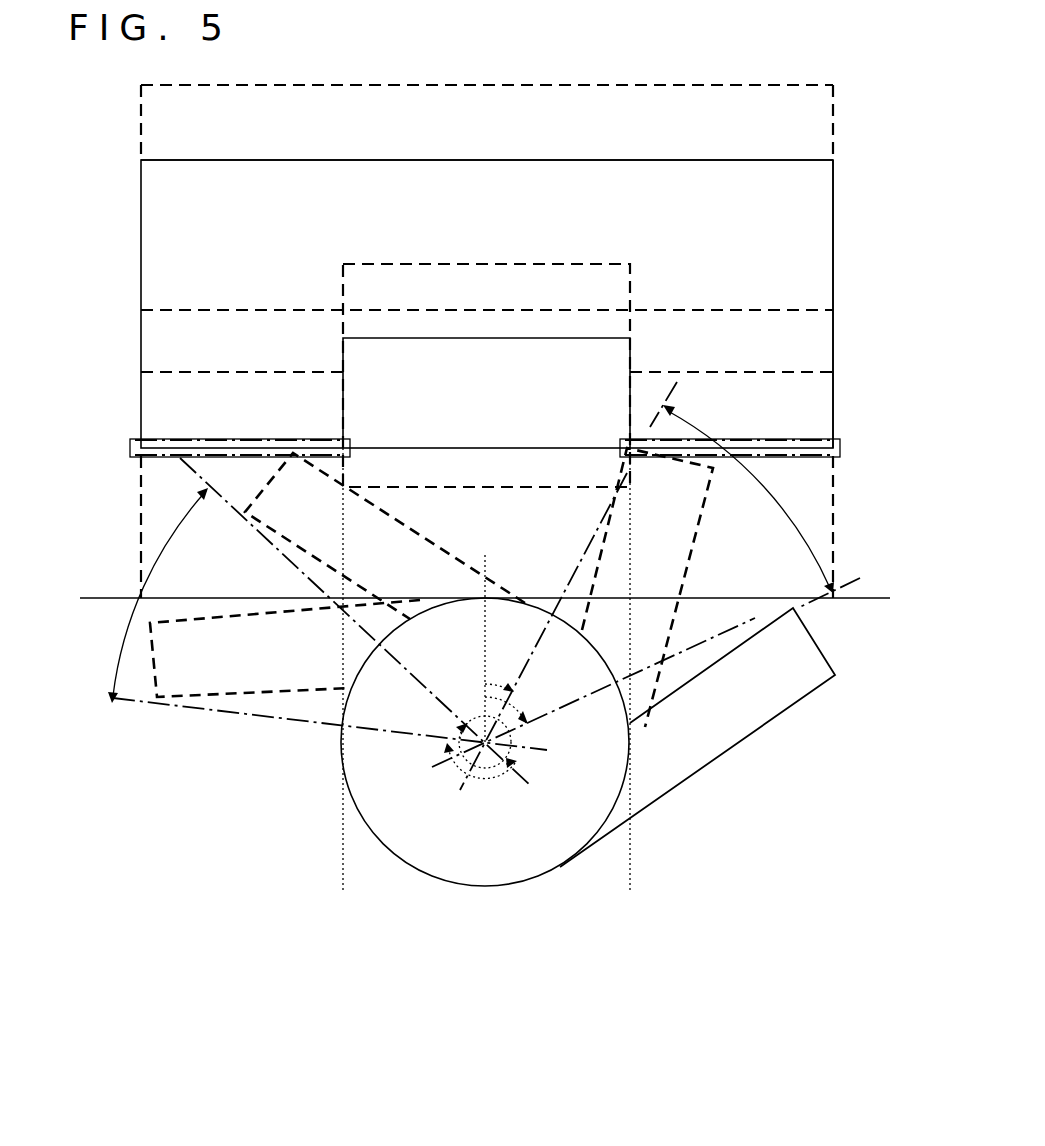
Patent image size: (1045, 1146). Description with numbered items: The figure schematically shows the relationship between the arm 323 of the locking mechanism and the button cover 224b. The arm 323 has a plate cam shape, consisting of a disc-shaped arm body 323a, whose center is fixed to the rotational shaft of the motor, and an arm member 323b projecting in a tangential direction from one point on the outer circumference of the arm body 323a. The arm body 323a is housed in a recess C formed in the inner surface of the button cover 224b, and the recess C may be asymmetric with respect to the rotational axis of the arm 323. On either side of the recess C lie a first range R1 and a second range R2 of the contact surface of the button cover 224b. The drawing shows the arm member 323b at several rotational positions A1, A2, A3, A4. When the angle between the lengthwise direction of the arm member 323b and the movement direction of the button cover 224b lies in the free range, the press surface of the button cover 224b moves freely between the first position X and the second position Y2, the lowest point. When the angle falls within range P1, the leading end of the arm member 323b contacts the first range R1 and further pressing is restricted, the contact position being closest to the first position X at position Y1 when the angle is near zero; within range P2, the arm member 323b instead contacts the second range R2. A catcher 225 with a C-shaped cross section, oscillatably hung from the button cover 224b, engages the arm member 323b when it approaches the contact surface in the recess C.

The catcher 225 is at (152, 237).
The button cover 224b is at (818, 403).
The arm 323 is at (658, 1028).
The arm body 323a is at (491, 862).
The arm member 323b is at (848, 672).
The first position X is at (843, 84).
The closest contact position Y1 is at (840, 160).
The second position Y2 is at (845, 310).
The recess C is at (492, 333).
The first range of the contact surface R1 is at (838, 456).
The second range of the contact surface R2 is at (130, 452).
The range P1 is at (748, 499).
The range P2 is at (150, 595).
The blade position A1 is at (702, 560).
The blade position A2 is at (703, 775).
The blade position A3 is at (226, 712).
The blade position A4 is at (320, 585).